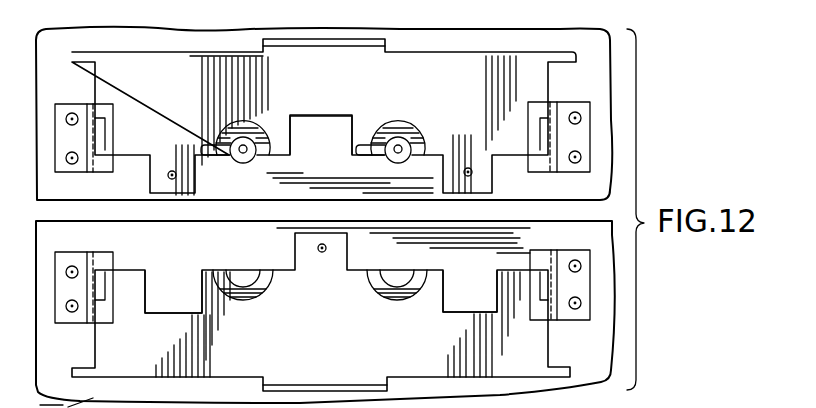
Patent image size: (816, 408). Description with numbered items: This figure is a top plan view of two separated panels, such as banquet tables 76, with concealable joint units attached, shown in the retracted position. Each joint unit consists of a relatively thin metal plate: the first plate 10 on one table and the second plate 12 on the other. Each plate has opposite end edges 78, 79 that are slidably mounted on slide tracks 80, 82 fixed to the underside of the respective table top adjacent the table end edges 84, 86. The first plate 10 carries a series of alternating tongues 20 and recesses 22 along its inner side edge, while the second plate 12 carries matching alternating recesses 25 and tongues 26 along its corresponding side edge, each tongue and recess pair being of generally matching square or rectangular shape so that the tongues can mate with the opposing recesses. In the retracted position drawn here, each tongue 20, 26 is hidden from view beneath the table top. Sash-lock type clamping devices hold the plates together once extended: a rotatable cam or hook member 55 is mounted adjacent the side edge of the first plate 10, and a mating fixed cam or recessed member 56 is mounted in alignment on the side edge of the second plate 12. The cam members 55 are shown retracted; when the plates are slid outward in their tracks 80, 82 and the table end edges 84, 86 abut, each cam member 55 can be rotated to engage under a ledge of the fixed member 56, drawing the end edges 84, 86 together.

The first plate 10 is at (462, 57).
The second plate 12 is at (232, 367).
The tongue 20 is at (157, 180).
The recess 22 is at (307, 117).
The recess 25 is at (153, 313).
The tongue 26 is at (310, 242).
The cam or hook member 55 is at (383, 130).
The fixed cam or recessed member 56 is at (377, 284).
The banquet table 76 is at (583, 47).
The end edge of plate 78 is at (95, 80).
The end edge of plate 79 is at (550, 81).
The slide track 80 is at (102, 118).
The slide track 82 is at (540, 107).
The table end edge 84 is at (185, 203).
The table end edge 86 is at (210, 222).